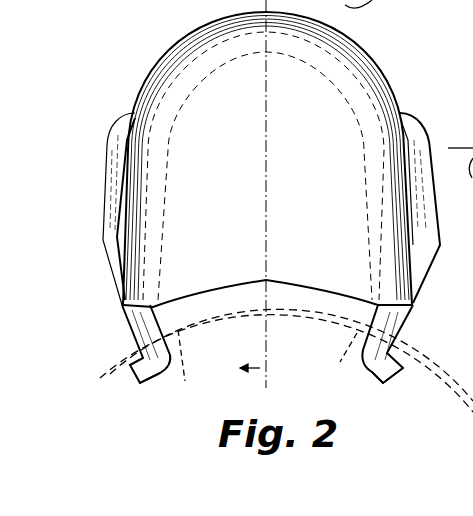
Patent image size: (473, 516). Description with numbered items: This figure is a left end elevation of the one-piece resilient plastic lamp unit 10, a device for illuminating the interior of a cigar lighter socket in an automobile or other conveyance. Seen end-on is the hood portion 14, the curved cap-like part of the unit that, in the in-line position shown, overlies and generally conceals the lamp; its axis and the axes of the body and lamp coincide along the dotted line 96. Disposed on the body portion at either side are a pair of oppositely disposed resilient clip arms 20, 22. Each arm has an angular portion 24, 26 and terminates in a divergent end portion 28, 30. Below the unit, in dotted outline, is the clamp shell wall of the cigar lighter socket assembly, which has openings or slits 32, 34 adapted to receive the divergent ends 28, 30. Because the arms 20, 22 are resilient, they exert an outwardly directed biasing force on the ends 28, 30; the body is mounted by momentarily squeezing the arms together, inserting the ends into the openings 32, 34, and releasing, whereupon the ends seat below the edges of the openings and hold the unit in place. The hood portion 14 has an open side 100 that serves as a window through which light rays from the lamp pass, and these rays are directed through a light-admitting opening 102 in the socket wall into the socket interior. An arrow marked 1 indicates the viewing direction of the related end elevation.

The lamp unit 10 is at (146, 59).
The hood portion 14 is at (357, 87).
The resilient clip arm 20 is at (114, 180).
The resilient clip arm 22 is at (427, 157).
The angular portion 24 is at (140, 322).
The angular portion 26 is at (400, 328).
The divergent end portion 28 is at (146, 384).
The divergent end portion 30 is at (388, 381).
The opening 32 is at (182, 366).
The opening 34 is at (337, 359).
The dotted line 96 is at (460, 171).
The open side 100 is at (338, 293).
The light-admitting opening 102 is at (245, 313).
The section line 1 is at (240, 371).